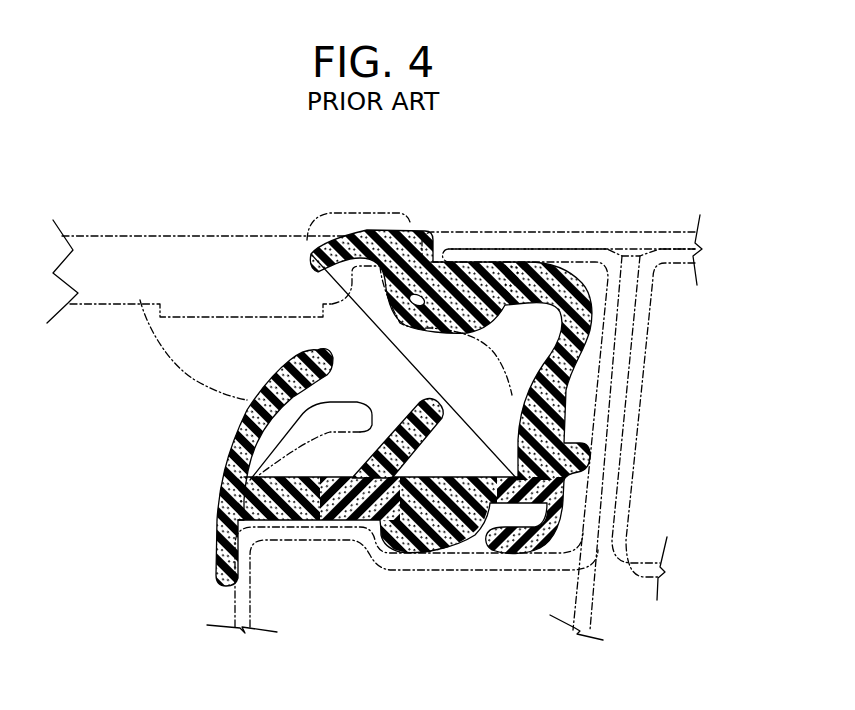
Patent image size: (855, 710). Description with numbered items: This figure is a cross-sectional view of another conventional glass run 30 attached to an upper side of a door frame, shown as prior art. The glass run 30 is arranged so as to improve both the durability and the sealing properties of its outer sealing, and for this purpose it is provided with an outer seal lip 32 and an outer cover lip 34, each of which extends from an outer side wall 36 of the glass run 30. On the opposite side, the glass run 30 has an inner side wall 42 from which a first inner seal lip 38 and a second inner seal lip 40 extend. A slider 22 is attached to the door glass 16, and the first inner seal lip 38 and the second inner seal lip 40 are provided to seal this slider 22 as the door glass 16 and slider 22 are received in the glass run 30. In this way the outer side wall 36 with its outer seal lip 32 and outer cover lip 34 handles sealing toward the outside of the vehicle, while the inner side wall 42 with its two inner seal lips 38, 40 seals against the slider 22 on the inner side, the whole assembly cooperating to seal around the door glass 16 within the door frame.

The door glass 16 is at (213, 236).
The slider 22 is at (180, 347).
The conventional glass run 30 is at (431, 311).
The outer seal lip 32 is at (473, 232).
The outer cover lip 34 is at (300, 245).
The outer side wall 36 is at (503, 267).
The first inner seal lip 38 is at (418, 478).
The second inner seal lip 40 is at (240, 417).
The inner side wall 42 is at (372, 490).